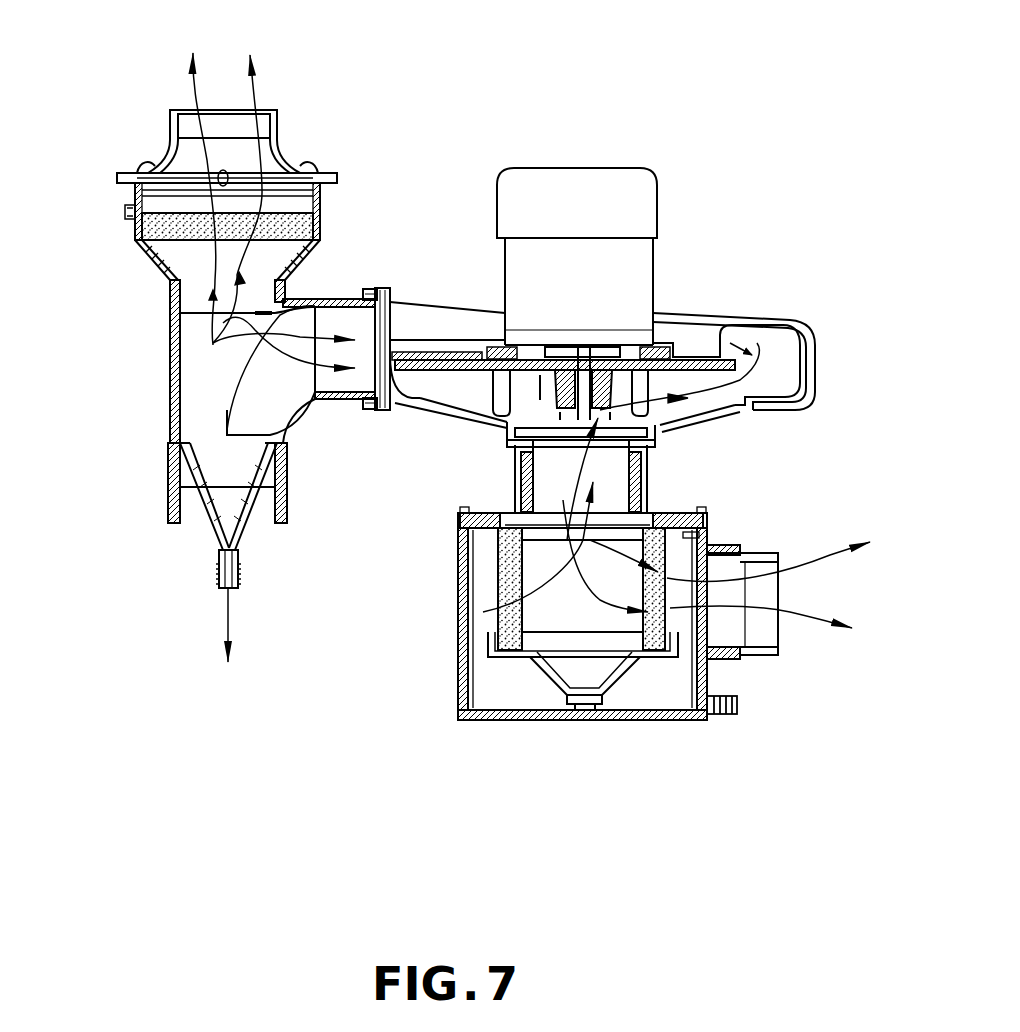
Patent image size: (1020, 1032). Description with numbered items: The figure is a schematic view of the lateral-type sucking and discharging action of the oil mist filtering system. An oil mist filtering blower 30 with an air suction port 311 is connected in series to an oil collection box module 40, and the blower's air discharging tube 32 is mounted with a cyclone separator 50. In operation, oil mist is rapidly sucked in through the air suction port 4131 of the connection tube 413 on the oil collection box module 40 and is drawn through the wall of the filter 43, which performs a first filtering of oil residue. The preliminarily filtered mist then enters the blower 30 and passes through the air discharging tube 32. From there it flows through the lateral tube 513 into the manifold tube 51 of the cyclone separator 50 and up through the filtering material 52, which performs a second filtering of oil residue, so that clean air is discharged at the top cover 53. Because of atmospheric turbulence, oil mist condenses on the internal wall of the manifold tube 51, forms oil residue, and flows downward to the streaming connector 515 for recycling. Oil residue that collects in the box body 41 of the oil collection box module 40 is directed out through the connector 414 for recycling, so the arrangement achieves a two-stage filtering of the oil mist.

The oil mist filtering blower 30 is at (705, 250).
The air discharging tube 32 is at (410, 316).
The air suction port 311 is at (610, 470).
The oil collection box module 40 is at (437, 630).
The box body 41 is at (502, 716).
The filter 43 is at (650, 662).
The connection tube 413 is at (738, 543).
The air suction port 4131 is at (765, 635).
The connector 414 is at (738, 712).
The cyclone separator 50 is at (366, 160).
The manifold tube 51 is at (172, 378).
The filtering material 52 is at (135, 228).
The top cover 53 is at (165, 157).
The lateral tube 513 is at (340, 397).
The streaming connector 515 is at (216, 577).